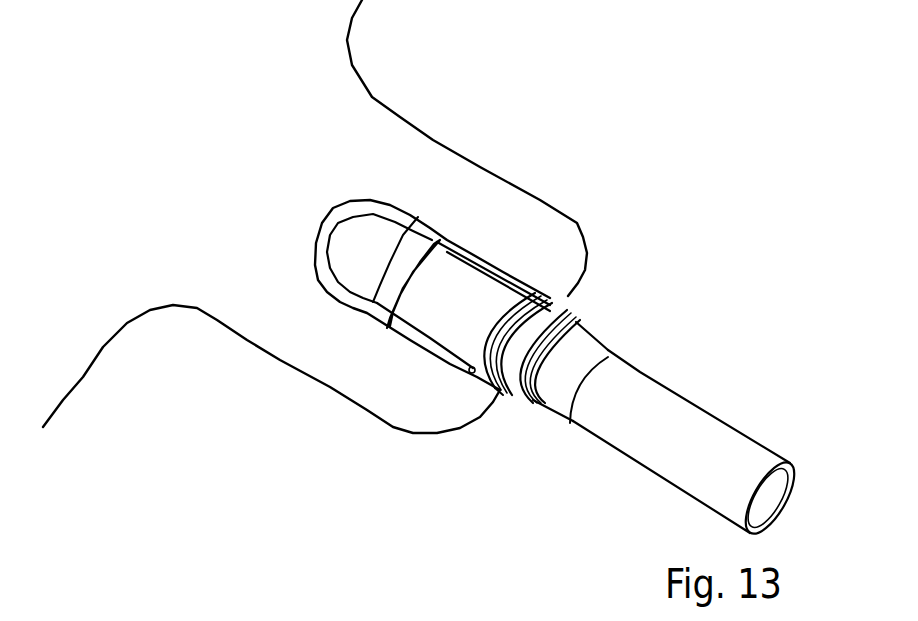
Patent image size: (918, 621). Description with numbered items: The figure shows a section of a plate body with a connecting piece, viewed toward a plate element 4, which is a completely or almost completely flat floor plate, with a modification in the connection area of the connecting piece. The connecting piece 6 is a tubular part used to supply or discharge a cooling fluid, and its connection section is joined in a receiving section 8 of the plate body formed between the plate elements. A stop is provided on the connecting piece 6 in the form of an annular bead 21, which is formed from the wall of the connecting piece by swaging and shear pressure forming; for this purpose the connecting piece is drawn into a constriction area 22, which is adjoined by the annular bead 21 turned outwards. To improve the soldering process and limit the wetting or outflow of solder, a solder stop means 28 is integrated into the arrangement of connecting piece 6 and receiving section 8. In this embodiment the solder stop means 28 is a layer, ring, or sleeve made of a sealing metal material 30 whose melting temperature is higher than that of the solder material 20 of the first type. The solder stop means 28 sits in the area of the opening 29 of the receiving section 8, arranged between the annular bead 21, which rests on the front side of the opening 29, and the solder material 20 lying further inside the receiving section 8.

The plate element 4 is at (315, 216).
The connecting piece 6 is at (687, 430).
The receiving section 8 is at (407, 348).
The solder material 20 is at (463, 215).
The annular bead 21 is at (609, 331).
The constriction area 22 is at (567, 435).
The solder stop means 28 is at (544, 296).
The opening 29 is at (486, 452).
The sealing metal material 30 is at (431, 438).